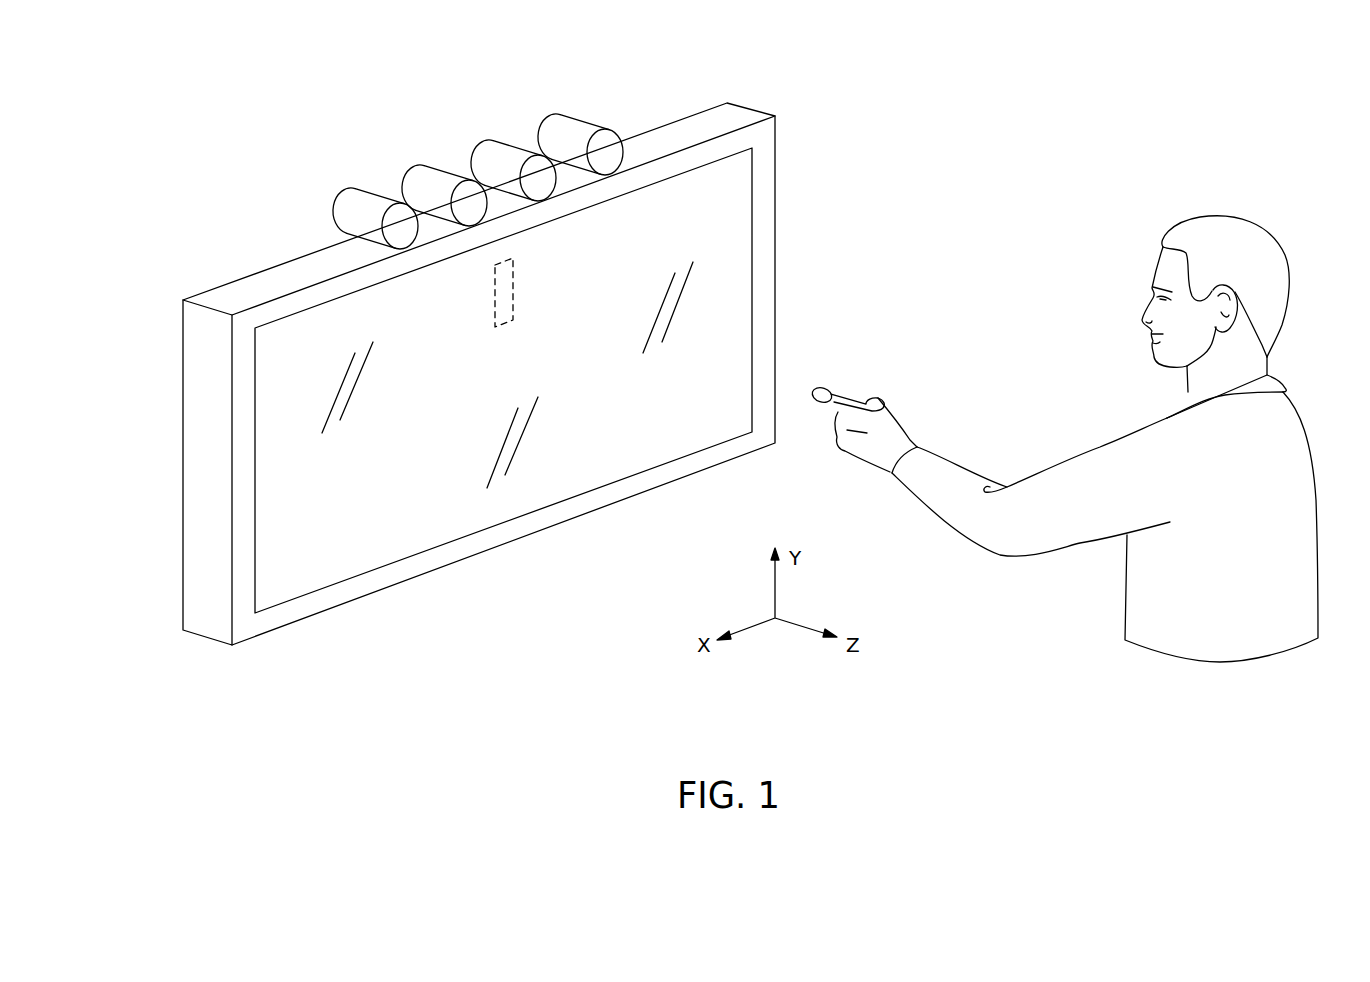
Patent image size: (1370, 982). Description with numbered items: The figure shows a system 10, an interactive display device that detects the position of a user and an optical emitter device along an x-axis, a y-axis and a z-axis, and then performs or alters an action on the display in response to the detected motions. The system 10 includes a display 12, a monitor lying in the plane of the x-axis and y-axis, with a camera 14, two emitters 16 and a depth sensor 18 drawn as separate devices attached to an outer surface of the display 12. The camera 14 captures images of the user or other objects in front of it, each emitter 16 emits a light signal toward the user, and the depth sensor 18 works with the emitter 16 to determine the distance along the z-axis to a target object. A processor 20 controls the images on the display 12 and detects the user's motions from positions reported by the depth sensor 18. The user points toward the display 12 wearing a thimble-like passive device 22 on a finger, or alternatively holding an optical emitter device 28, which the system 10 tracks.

The system 10 is at (943, 148).
The display 12 is at (400, 503).
The camera 14 is at (468, 193).
The emitter 16 is at (357, 217).
The depth sensor 18 is at (608, 148).
The processor 20 is at (512, 288).
The passive device 22 is at (876, 406).
The optical emitter device 28 is at (825, 385).